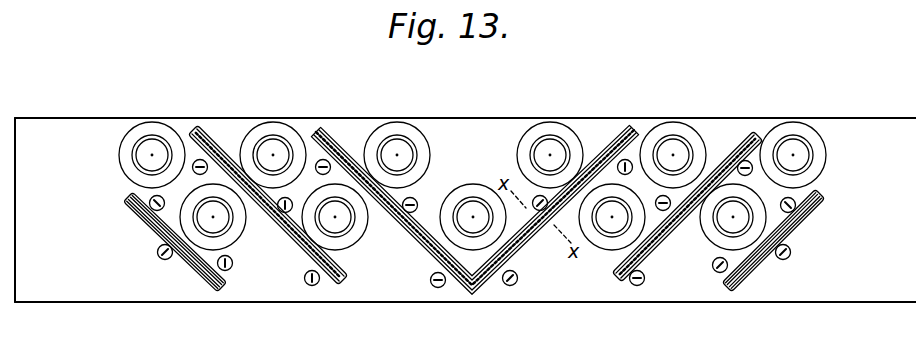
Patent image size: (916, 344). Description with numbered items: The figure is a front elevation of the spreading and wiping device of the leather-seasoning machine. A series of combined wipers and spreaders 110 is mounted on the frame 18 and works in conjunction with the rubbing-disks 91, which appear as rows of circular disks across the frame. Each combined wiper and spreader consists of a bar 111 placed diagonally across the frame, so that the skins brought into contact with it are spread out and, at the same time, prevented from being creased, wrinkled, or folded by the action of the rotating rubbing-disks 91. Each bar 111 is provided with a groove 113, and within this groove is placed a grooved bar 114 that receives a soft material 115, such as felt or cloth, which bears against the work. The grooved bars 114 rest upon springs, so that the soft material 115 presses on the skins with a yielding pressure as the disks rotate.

The frame 18 is at (467, 128).
The rubbing-disk 91 is at (271, 150).
The combined wiper and spreader 110 is at (516, 262).
The bar 111 is at (152, 230).
The groove 113 is at (210, 268).
The grooved bar 114 is at (412, 234).
The soft material 115 is at (292, 238).